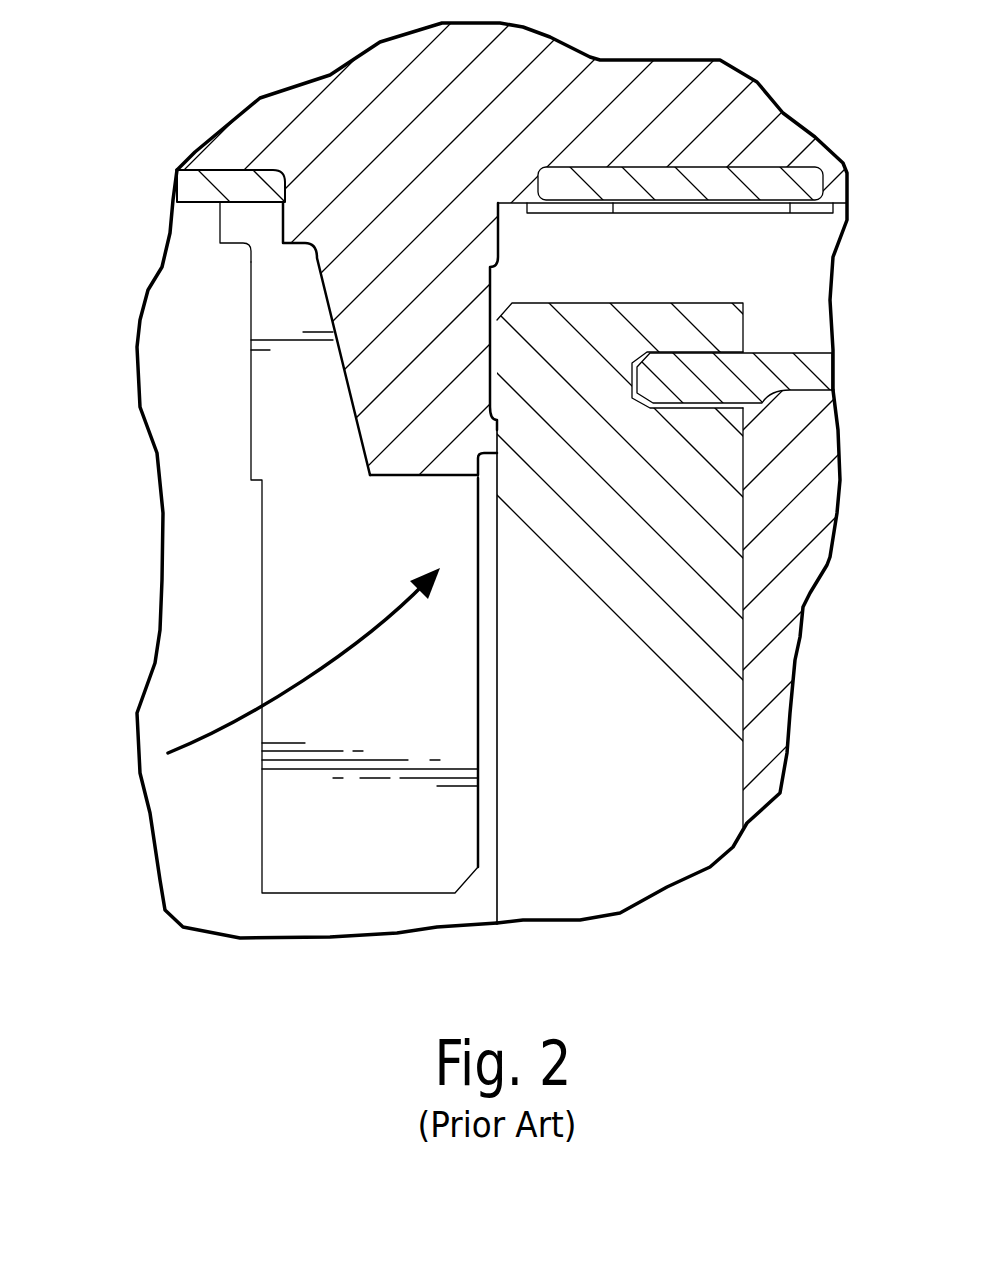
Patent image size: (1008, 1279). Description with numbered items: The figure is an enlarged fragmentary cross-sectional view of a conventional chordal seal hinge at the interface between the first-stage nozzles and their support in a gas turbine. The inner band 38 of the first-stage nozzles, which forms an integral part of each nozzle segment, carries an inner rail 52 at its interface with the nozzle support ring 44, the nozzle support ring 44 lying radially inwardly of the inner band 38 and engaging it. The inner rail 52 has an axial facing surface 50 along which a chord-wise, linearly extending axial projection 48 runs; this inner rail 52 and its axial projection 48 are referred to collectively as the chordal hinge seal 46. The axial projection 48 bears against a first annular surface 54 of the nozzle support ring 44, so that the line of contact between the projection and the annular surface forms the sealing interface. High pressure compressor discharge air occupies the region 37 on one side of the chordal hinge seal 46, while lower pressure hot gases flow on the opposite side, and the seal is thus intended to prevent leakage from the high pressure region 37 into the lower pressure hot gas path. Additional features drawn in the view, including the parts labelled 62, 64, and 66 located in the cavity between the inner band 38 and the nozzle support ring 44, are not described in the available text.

The high pressure region 37 is at (193, 655).
The inner band 38 is at (315, 123).
The nozzle support ring 44 is at (657, 873).
The chordal hinge seal 46 is at (170, 370).
The axial projection 48 is at (493, 437).
The axial facing surface 50 is at (490, 300).
The inner rail 52 is at (360, 273).
The first annular surface 54 is at (495, 645).
The cavity plate 62 is at (641, 270).
The retaining ring 64 is at (733, 300).
The seal ring 66 is at (747, 200).